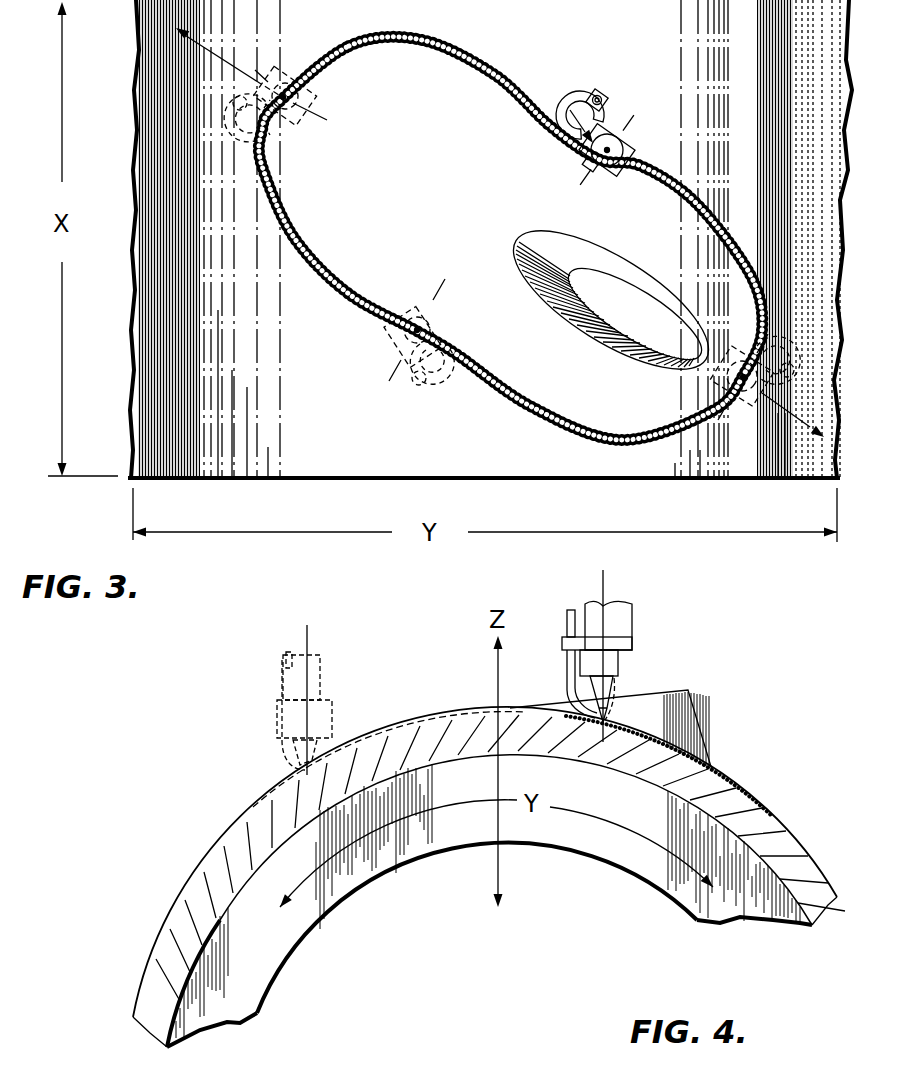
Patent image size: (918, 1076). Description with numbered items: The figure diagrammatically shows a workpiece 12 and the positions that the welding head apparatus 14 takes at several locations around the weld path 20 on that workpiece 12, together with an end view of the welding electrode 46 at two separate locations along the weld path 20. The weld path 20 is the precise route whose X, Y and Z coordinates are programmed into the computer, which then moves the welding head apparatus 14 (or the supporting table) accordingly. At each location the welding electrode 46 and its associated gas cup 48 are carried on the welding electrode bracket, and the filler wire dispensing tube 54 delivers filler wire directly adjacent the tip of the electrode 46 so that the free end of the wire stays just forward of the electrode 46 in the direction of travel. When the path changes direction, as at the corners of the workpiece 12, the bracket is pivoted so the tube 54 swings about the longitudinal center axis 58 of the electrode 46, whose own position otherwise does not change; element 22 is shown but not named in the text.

In FIG. 3, the workpiece 12 is at (827, 253).
In FIG. 4, the workpiece 12 is at (812, 842).
In FIG. 3, the welding head apparatus 14 is at (290, 62).
In FIG. 3, the weld path 20 is at (757, 292).
In FIG. 4, the weld path 20 is at (752, 797).
In FIG. 3, the clamp body 22 is at (632, 152).
In FIG. 4, the welding electrode 46 is at (292, 762).
In FIG. 4, the gas cup 48 is at (282, 724).
In FIG. 3, the filler wire dispensing tube 54 is at (567, 97).
In FIG. 3, the longitudinal center axis 58 is at (290, 99).
In FIG. 4, the longitudinal center axis 58 is at (606, 586).